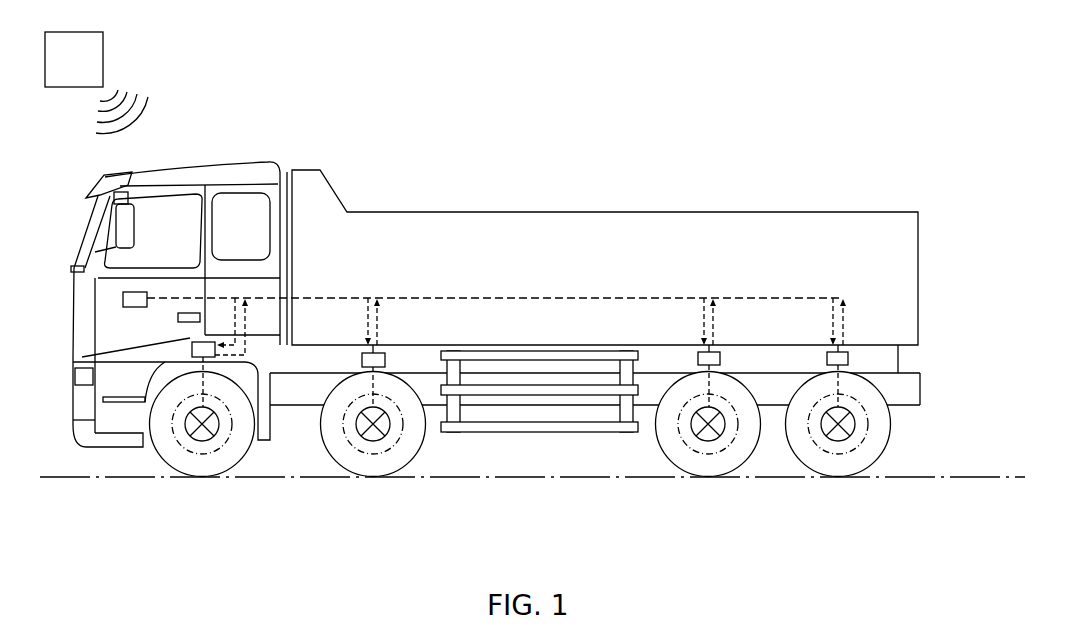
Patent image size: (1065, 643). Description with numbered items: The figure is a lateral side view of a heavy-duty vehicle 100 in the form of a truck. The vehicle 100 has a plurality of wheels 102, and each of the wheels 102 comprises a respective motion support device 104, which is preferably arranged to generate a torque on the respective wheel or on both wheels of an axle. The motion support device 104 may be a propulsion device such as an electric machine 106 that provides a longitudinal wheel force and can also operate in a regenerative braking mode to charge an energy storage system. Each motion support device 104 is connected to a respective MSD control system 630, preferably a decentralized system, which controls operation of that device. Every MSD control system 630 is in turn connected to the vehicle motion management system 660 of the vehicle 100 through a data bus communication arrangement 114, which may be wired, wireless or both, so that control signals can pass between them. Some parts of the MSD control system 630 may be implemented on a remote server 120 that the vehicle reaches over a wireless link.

The vehicle 100 is at (527, 106).
The wheels 102 is at (520, 447).
The motion support device 104 is at (534, 464).
The electric machine 106 is at (486, 458).
The data bus communication arrangement 114 is at (587, 297).
The remote server 120 is at (103, 59).
The MSD control system 630 is at (192, 351).
The vehicle motion management system 660 is at (123, 300).